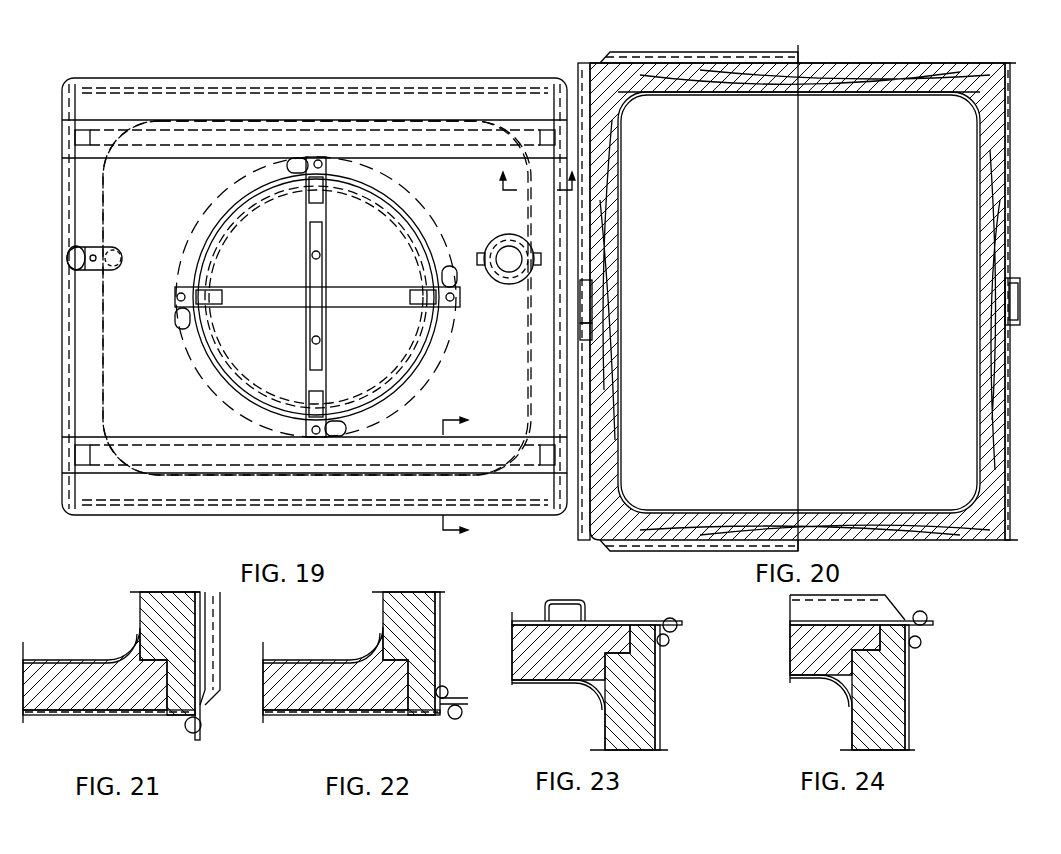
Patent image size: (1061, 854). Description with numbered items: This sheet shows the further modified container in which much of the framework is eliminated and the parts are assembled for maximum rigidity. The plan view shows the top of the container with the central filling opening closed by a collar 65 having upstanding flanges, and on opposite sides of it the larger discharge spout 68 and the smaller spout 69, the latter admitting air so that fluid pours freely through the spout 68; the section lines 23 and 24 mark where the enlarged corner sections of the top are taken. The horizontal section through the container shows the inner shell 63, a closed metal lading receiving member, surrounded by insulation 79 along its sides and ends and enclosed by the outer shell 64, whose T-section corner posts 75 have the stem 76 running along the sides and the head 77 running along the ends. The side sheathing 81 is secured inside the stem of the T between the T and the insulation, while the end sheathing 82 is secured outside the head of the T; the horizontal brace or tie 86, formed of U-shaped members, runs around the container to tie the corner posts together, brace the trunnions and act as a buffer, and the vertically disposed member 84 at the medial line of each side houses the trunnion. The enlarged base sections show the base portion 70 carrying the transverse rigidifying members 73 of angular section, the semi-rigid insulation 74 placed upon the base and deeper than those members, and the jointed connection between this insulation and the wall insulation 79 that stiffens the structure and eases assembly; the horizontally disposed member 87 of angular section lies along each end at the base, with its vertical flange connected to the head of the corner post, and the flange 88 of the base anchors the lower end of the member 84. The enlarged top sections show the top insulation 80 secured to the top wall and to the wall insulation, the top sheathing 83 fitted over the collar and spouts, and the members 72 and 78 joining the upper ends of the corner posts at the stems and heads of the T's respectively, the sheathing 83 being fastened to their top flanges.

In FIG. 19, the section line 23— 23 is at (444, 476).
In FIG. 19, the section line 24— 24 is at (535, 192).
In FIG. 20, the inner shell 63 is at (724, 94).
In FIG. 21, the inner shell 63 is at (140, 594).
In FIG. 22, the inner shell 63 is at (383, 594).
In FIG. 23, the inner shell 63 is at (566, 680).
In FIG. 24, the inner shell 63 is at (835, 678).
In FIG. 20, the outer shell 64 is at (832, 63).
In FIG. 22, the outer shell 64 is at (441, 616).
In FIG. 23, the outer shell 64 is at (661, 682).
In FIG. 24, the outer shell 64 is at (910, 676).
In FIG. 19, the collar 65 is at (200, 222).
In FIG. 19, the spout 68 is at (503, 284).
In FIG. 19, the spout 69 is at (98, 250).
In FIG. 21, the base portion 70 is at (90, 714).
In FIG. 22, the base portion 70 is at (420, 714).
In FIG. 19, the member 72 is at (240, 88).
In FIG. 23, the member 72 is at (678, 630).
In FIG. 21, the rigidifying member 73 is at (112, 661).
In FIG. 21, the insulation 74 is at (88, 668).
In FIG. 20, the corner post 75 is at (580, 70).
In FIG. 19, the stem 76 is at (104, 84).
In FIG. 20, the stem 76 is at (1009, 88).
In FIG. 19, the head 77 is at (86, 78).
In FIG. 20, the head 77 is at (1010, 66).
In FIG. 19, the member 78 is at (68, 198).
In FIG. 24, the member 78 is at (922, 641).
In FIG. 20, the insulation 79 is at (848, 95).
In FIG. 21, the insulation 79 is at (165, 600).
In FIG. 22, the insulation 79 is at (410, 598).
In FIG. 23, the insulation 79 is at (640, 742).
In FIG. 24, the insulation 79 is at (890, 745).
In FIG. 23, the insulation 80 is at (520, 652).
In FIG. 20, the side sheathing 81 is at (605, 440).
In FIG. 20, the end sheathing 82 is at (905, 63).
In FIG. 23, the top sheathing 83 is at (610, 625).
In FIG. 24, the top sheathing 83 is at (930, 624).
In FIG. 20, the vertically disposed member 84 is at (1020, 290).
In FIG. 21, the vertically disposed member 84 is at (221, 632).
In FIG. 20, the horizontally disposed brace or tie 86 is at (675, 52).
In FIG. 22, the horizontally disposed member 87 is at (445, 688).
In FIG. 21, the flange 88 is at (185, 727).